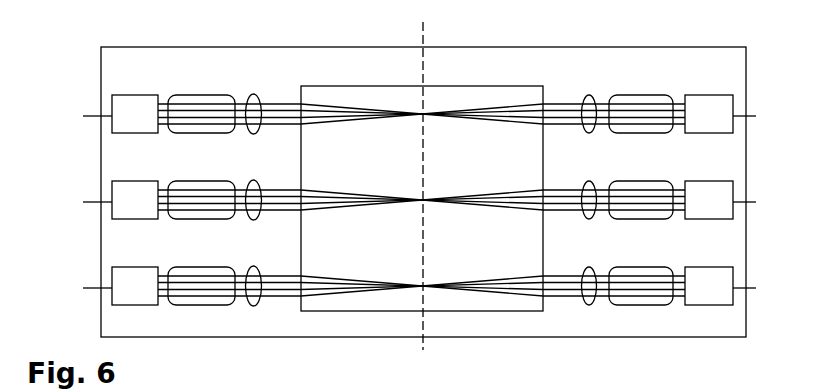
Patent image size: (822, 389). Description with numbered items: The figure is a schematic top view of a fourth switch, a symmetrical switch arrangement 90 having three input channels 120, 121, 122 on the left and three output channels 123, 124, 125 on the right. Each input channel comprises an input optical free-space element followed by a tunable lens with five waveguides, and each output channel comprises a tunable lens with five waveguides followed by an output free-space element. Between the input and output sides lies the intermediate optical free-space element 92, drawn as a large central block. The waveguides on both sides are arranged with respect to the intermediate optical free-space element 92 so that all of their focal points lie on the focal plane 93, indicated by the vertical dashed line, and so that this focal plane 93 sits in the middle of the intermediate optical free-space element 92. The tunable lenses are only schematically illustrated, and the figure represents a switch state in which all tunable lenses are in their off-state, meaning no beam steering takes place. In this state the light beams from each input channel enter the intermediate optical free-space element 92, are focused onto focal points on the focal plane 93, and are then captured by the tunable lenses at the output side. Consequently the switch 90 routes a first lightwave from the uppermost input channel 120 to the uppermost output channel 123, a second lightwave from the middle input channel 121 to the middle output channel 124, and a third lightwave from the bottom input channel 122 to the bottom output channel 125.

The symmetrical switch arrangement 90 is at (345, 60).
The intermediate optical free-space element 92 is at (505, 312).
The focal plane 93 is at (424, 31).
The input channel 120 is at (78, 120).
The input channel 121 is at (78, 206).
The input channel 122 is at (78, 292).
The output channel 123 is at (765, 120).
The output channel 124 is at (765, 206).
The output channel 125 is at (765, 292).